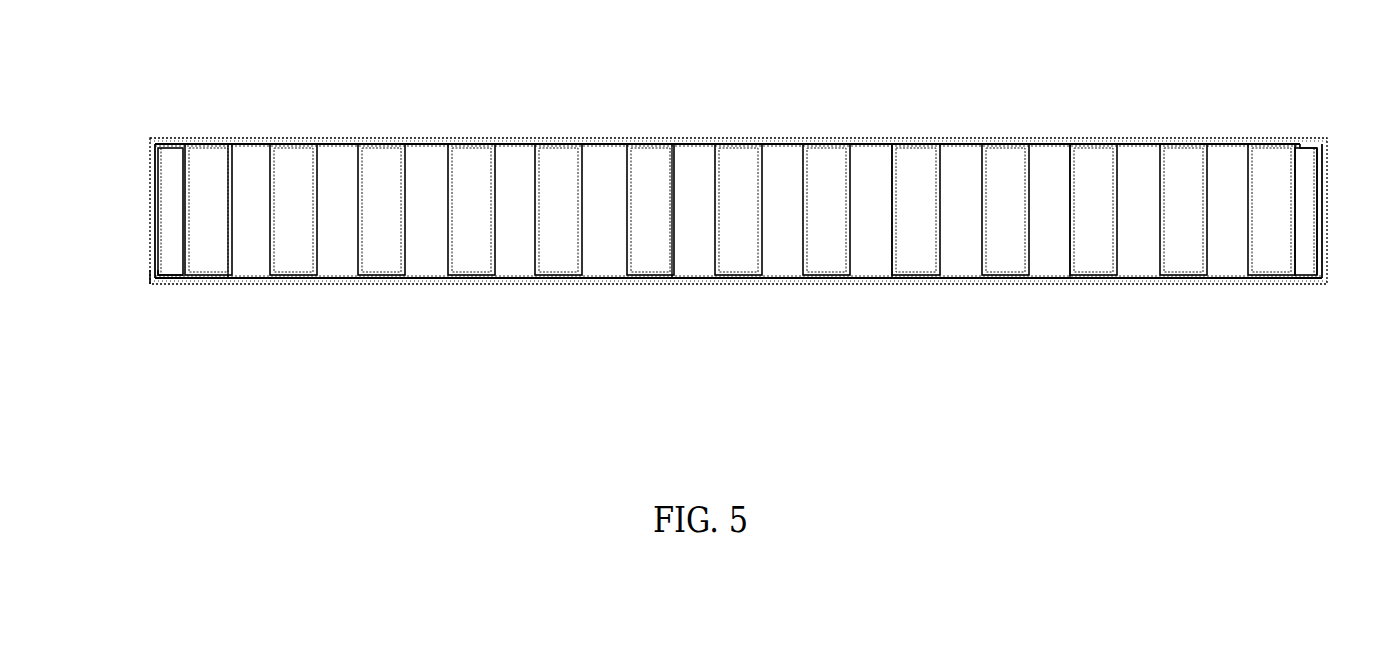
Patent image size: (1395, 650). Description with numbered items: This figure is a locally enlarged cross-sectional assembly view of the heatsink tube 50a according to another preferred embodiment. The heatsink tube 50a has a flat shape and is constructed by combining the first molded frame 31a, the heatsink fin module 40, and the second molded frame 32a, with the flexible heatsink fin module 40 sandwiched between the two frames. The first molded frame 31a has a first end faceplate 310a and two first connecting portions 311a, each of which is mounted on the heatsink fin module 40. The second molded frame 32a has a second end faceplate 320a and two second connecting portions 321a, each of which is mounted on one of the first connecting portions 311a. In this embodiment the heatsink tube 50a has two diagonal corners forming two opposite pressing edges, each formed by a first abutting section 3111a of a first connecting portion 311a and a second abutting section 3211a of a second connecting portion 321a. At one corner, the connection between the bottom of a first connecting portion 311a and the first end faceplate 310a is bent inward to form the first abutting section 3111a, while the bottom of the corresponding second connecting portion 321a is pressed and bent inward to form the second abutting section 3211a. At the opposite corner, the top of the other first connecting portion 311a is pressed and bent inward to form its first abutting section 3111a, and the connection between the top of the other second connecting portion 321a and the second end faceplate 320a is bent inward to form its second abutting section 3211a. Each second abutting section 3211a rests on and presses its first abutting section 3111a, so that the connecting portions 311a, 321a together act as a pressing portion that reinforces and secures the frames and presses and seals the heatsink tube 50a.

The second molded frame 32a is at (690, 225).
The second end faceplate 320a is at (607, 138).
The second connecting portion 321a is at (150, 190).
The second abutting section 3211a is at (165, 282).
The first molded frame 31a is at (767, 247).
The first end faceplate 310a is at (520, 283).
The first connecting portion 311a is at (162, 230).
The first abutting section 3111a is at (1308, 142).
The heatsink fin module 40 is at (942, 215).
The heatsink tube 50a is at (870, 303).